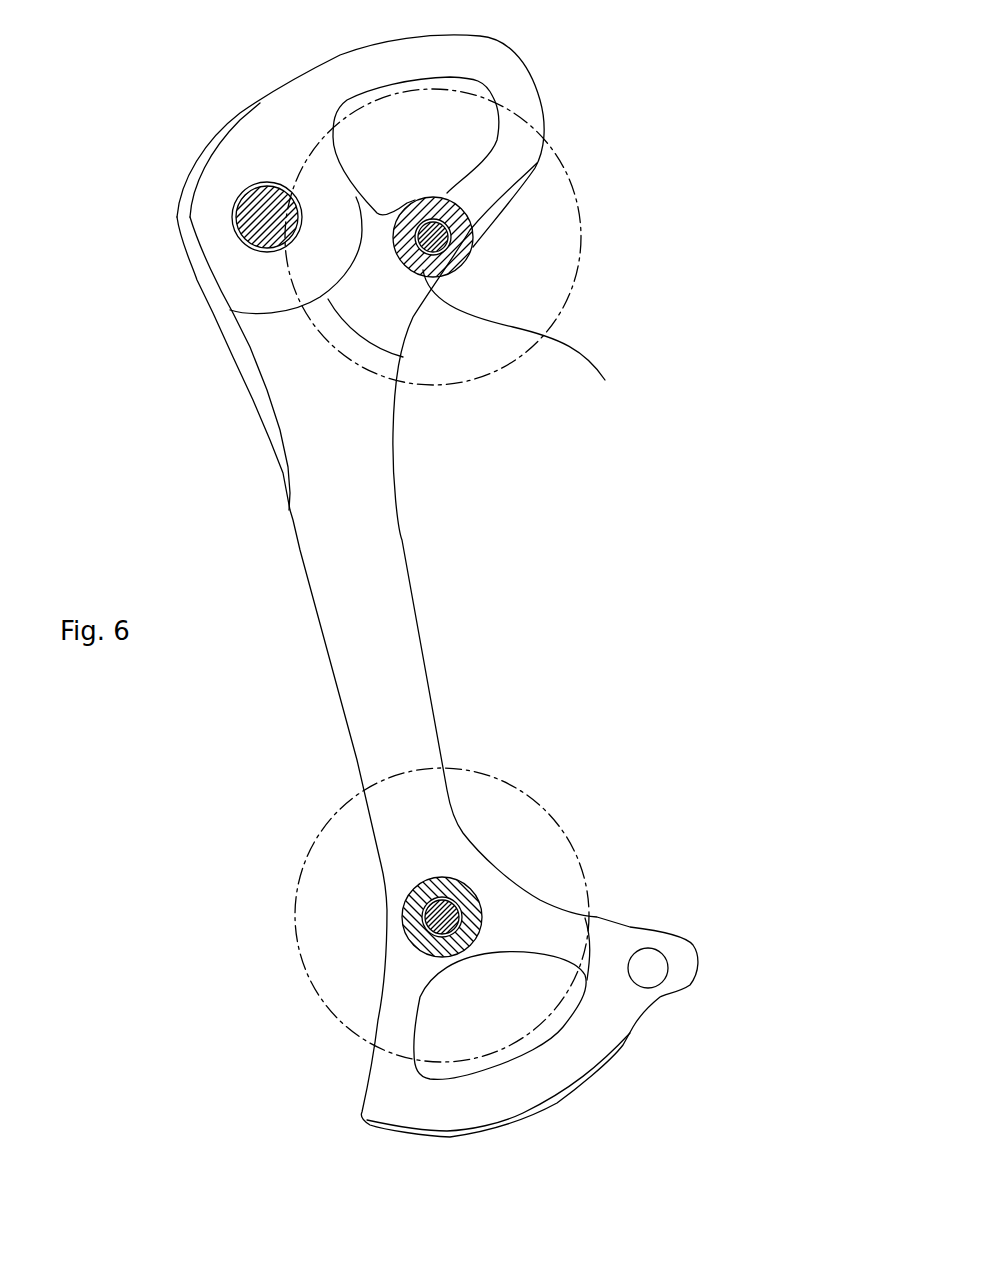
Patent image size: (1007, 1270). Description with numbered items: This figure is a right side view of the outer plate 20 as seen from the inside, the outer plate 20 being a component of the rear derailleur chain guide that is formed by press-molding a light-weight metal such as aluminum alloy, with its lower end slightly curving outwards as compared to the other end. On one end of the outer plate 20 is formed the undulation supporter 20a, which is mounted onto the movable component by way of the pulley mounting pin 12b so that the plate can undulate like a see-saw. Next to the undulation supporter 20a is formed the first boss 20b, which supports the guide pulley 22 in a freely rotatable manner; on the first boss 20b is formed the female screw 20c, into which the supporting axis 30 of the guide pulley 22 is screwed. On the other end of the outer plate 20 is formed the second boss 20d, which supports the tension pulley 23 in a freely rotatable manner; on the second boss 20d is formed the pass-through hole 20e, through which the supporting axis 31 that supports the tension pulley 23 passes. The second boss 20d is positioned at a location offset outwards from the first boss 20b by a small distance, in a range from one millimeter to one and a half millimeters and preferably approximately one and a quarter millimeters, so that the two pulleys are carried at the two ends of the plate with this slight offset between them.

The outer plate 20 is at (492, 607).
The undulation supporter 20a is at (235, 212).
The pulley mounting pin 12b is at (237, 238).
The first boss 20b is at (498, 130).
The supporting axis 30 is at (450, 222).
The guide pulley 22 is at (578, 278).
The female screw 20c is at (491, 347).
The second boss 20d is at (446, 880).
The tension pulley 23 is at (545, 810).
The pass-through hole 20e is at (485, 928).
The supporting axis 31 is at (402, 912).